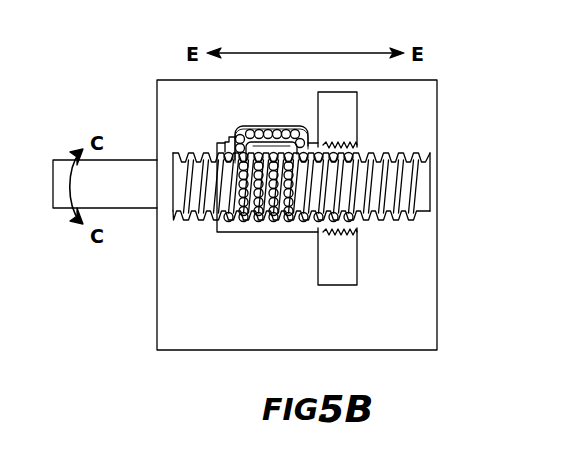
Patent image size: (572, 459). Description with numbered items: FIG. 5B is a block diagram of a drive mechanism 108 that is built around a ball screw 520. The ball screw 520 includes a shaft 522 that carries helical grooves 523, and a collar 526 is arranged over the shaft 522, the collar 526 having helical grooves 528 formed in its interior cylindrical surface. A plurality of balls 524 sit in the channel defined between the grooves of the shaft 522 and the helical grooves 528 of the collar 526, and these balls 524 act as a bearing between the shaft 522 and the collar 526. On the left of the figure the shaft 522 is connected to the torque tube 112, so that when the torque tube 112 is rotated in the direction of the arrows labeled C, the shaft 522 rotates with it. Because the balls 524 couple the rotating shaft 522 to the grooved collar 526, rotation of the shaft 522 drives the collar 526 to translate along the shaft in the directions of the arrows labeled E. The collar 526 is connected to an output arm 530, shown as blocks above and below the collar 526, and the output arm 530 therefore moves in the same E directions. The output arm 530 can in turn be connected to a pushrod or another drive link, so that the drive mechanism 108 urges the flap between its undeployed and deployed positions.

The drive mechanism 108 is at (436, 77).
The torque tube 112 is at (117, 160).
The ball screw 520 is at (420, 114).
The shaft 522 is at (422, 195).
The helical grooves 523 is at (418, 161).
The balls 524 is at (288, 221).
The collar 526 is at (355, 229).
The helical grooves 528 is at (217, 221).
The output arm 530 is at (338, 100).